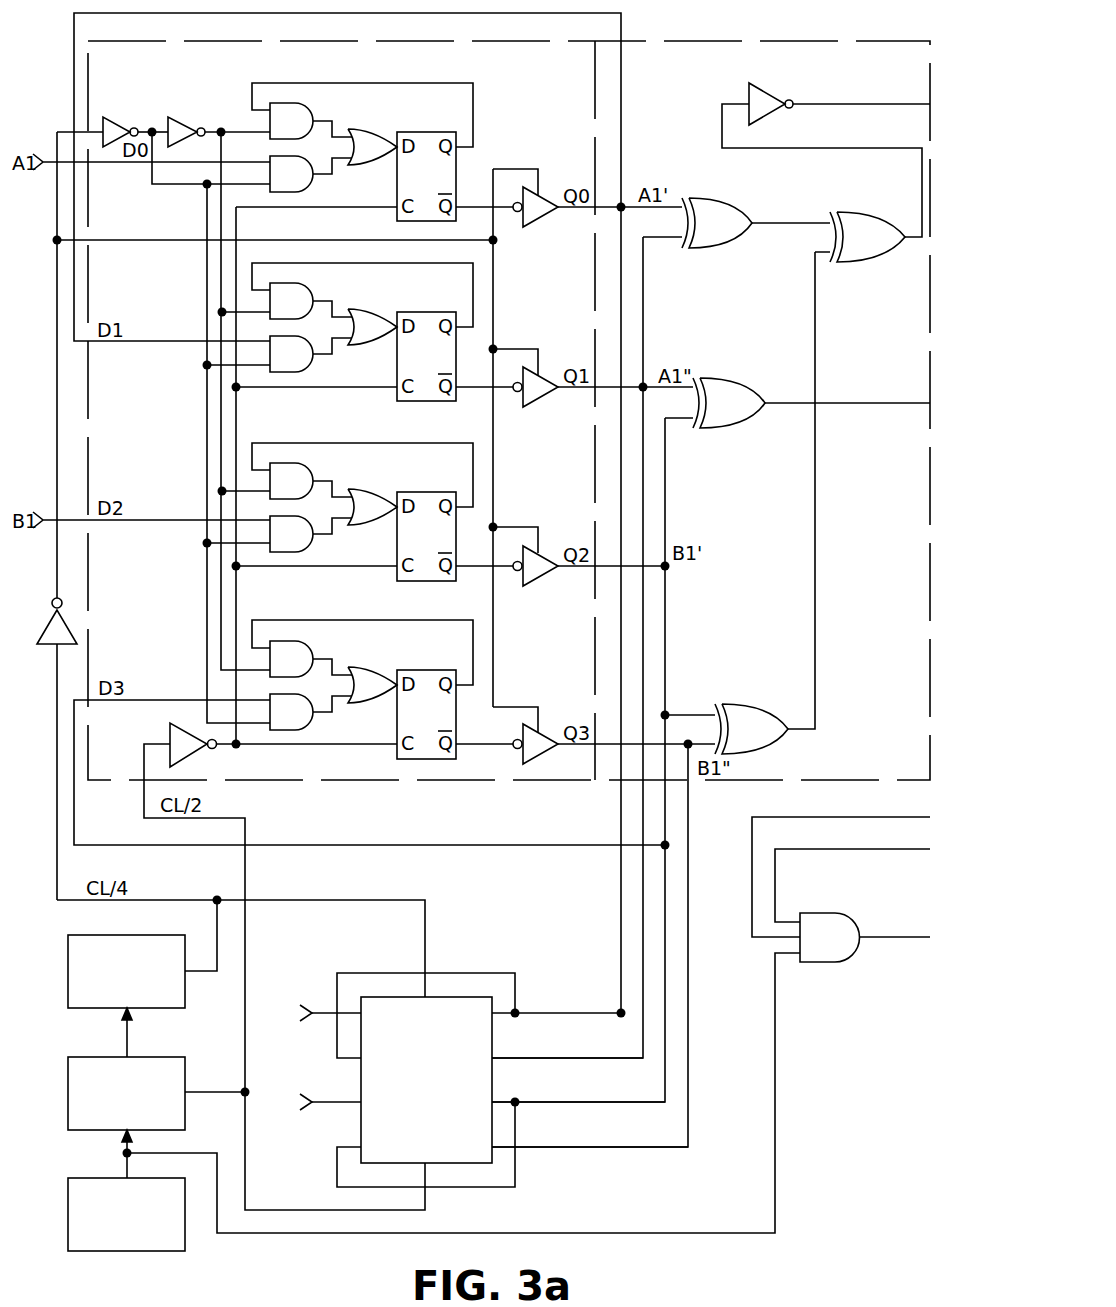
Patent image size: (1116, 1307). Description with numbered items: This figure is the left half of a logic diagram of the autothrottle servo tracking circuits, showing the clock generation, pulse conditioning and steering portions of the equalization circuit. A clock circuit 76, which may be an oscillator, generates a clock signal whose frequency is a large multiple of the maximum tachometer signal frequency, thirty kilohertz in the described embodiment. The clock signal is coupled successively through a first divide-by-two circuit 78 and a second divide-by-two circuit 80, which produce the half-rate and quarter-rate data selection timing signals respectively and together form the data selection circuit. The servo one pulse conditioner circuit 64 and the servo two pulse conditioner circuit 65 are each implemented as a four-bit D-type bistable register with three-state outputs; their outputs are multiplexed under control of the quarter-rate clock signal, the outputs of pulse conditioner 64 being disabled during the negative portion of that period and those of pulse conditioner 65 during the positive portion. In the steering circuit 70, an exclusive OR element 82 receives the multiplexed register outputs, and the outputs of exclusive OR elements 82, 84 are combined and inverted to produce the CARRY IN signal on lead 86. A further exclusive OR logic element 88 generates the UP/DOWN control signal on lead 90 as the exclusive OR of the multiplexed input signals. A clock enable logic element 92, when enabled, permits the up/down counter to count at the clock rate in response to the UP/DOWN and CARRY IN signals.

The servo 1 pulse conditioner circuit 64 is at (553, 91).
The servo 2 pulse conditioner circuit 65 is at (440, 1095).
The steering circuit 70 is at (671, 94).
The clock circuit 76 is at (68, 1227).
The divide-by-two circuit 78 is at (68, 1105).
The divide-by-two circuit 80 is at (68, 985).
The exclusive OR element 82 is at (712, 198).
The exclusive OR logic element 84 is at (742, 703).
The CARRY IN lead 86 is at (853, 106).
The exclusive OR logic element 88 is at (725, 378).
The UP/DOWN lead 90 is at (863, 405).
The clock enable logic element 92 is at (825, 913).